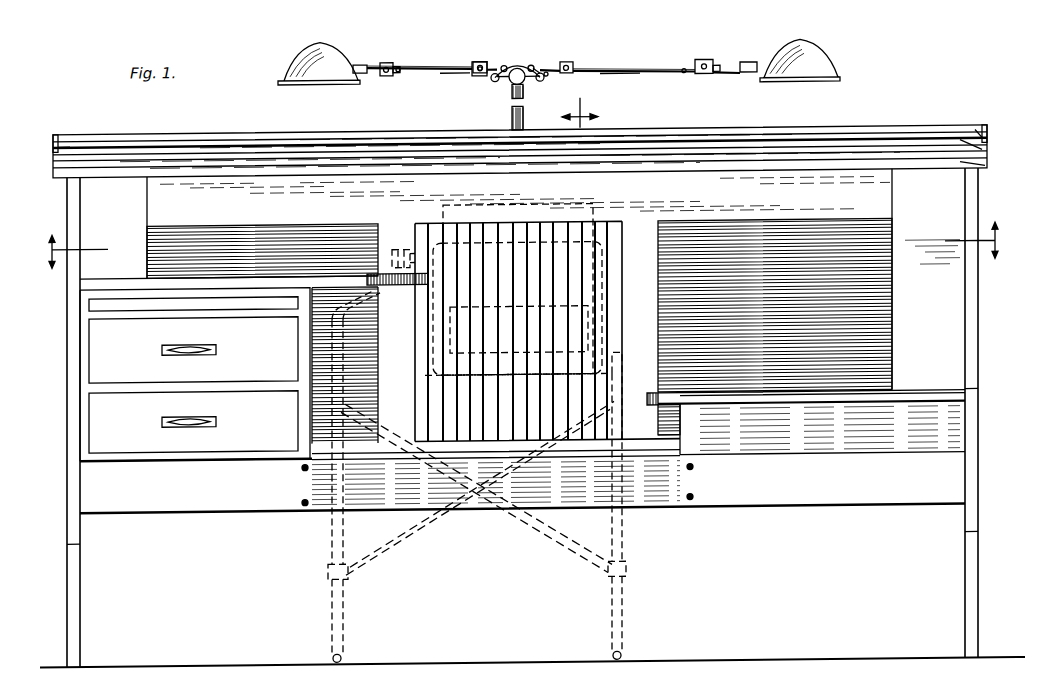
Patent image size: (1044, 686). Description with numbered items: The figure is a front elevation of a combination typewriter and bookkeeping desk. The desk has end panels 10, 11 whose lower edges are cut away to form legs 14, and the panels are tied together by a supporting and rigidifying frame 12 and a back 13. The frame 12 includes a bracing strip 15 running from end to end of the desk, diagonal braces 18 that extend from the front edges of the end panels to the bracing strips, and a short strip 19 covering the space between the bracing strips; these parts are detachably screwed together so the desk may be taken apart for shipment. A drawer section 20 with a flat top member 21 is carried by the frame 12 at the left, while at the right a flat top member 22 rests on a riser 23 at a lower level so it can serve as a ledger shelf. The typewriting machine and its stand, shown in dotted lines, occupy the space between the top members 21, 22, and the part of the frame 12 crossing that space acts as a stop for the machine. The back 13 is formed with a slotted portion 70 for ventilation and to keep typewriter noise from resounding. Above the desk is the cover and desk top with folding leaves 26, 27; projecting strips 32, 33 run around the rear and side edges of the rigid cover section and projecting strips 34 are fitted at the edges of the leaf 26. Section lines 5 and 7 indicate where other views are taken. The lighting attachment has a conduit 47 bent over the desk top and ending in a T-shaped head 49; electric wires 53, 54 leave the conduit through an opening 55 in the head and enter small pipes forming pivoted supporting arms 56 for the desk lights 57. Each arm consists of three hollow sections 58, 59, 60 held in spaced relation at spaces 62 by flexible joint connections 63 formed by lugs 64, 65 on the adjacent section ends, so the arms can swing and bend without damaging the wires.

The section line 5 is at (520, 245).
The section line 7 is at (580, 106).
The end panel 10 is at (72, 429).
The end panel 11 is at (970, 399).
The supporting and rigidifying frame 12 is at (400, 513).
The back 13 is at (775, 305).
The legs 14 is at (77, 634).
The bracing strip 15 is at (478, 508).
The braces 18 is at (173, 495).
The short strip 19 is at (400, 454).
The drawer section 20 is at (102, 373).
The flat top member 21 is at (256, 262).
The flat top member 22 is at (777, 405).
The riser 23 is at (710, 426).
The folding leaf 26 is at (988, 157).
The folding leaf 27 is at (987, 176).
The projecting strip 32 is at (840, 135).
The projecting strip 33 is at (58, 136).
The projecting strips 34 is at (53, 149).
The conduit 47 is at (512, 122).
The T-shaped head 49 is at (510, 92).
The electric wire 53 is at (516, 73).
The electric wire 54 is at (534, 72).
The opening 55 is at (519, 62).
The pivoted supporting arms 56 is at (432, 70).
The desk lights 57 is at (646, 84).
The hollow section 58 is at (482, 67).
The hollow section 59 is at (440, 79).
The hollow section 60 is at (360, 69).
The space 62 is at (386, 67).
The flexible joint connections 63 is at (388, 78).
The lug 64 is at (397, 71).
The lug 65 is at (382, 78).
The slotted portion 70 is at (612, 228).